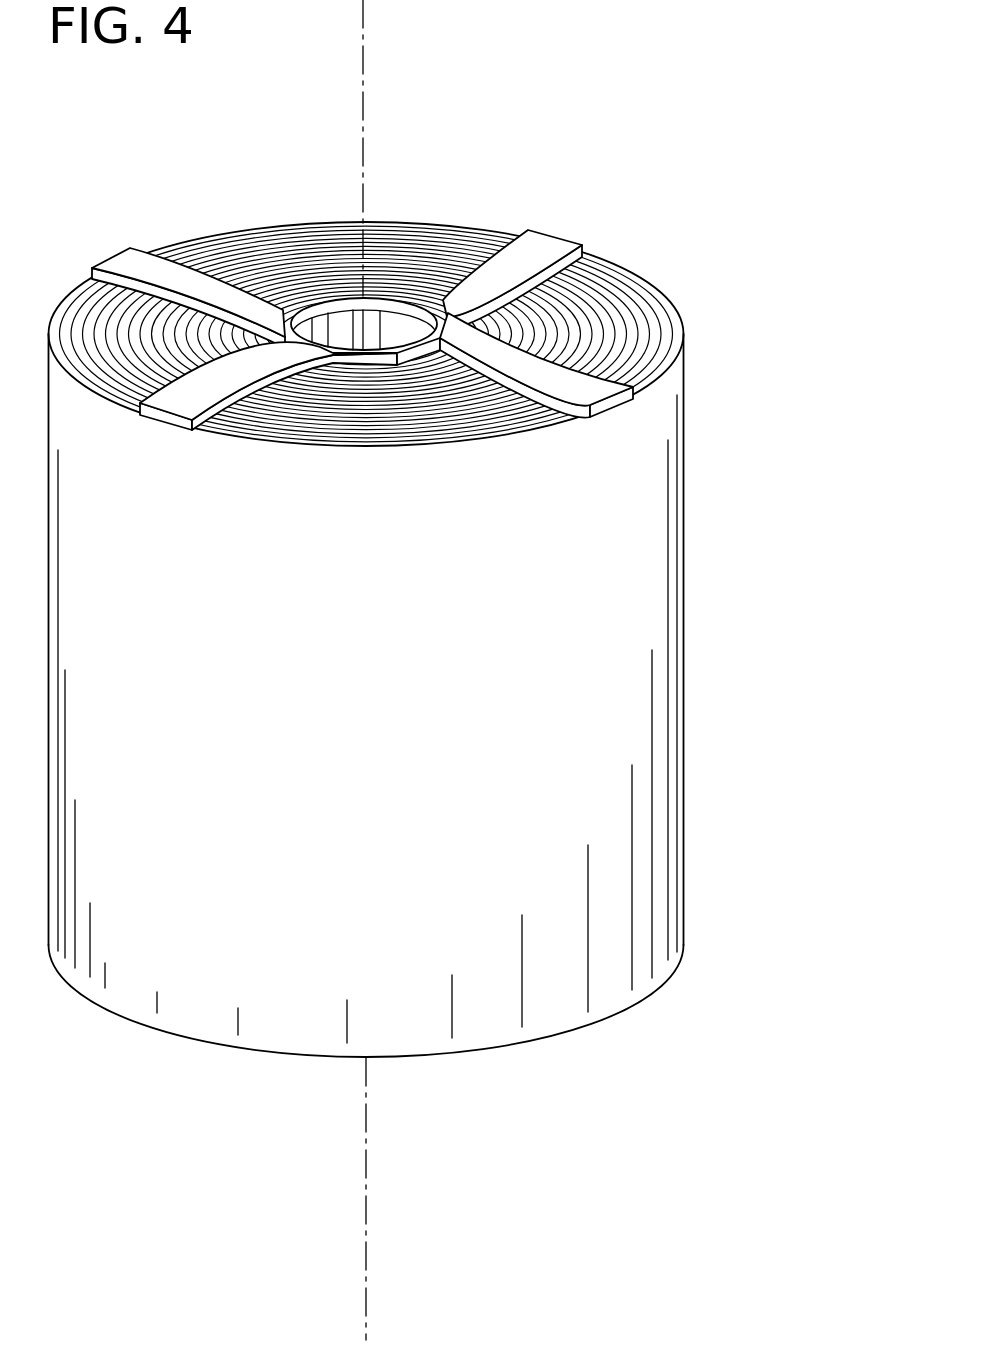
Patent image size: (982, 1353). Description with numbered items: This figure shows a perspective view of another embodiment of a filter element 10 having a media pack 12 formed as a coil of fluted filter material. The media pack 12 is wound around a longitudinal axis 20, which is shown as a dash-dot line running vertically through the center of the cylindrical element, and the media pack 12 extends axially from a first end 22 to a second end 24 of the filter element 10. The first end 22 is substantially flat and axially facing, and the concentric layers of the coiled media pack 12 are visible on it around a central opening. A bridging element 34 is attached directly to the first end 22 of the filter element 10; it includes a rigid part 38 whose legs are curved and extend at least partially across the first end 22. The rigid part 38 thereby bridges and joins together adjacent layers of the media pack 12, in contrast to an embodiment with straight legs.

The filter element 10 is at (712, 135).
The media pack 12 is at (637, 613).
The longitudinal axis 20 is at (363, 18).
The first end 22 is at (112, 323).
The second end 24 is at (595, 1022).
The bridging element 34 is at (551, 250).
The rigid part 38 is at (593, 392).